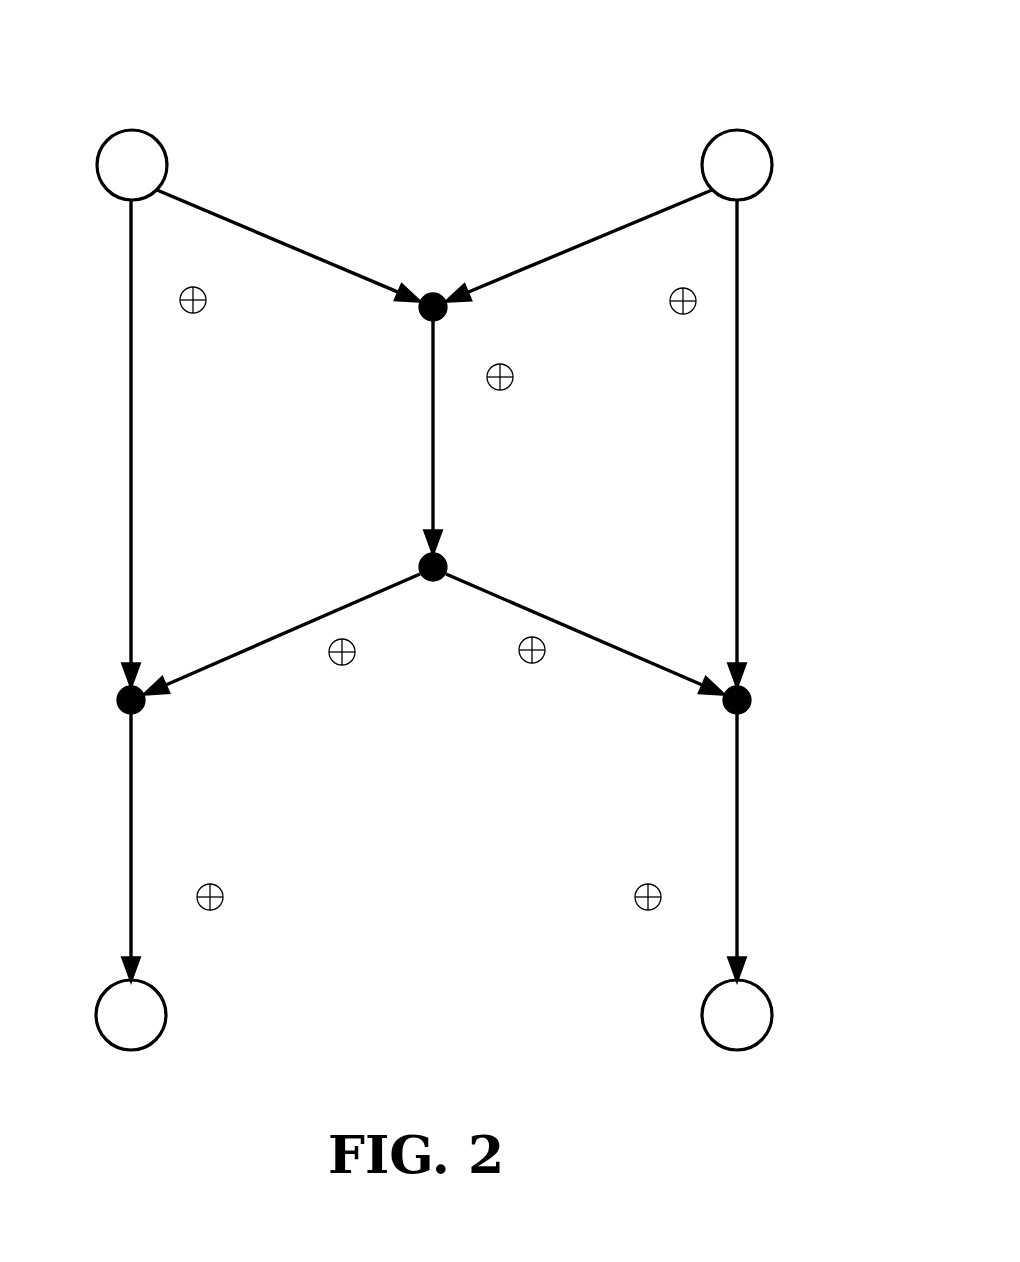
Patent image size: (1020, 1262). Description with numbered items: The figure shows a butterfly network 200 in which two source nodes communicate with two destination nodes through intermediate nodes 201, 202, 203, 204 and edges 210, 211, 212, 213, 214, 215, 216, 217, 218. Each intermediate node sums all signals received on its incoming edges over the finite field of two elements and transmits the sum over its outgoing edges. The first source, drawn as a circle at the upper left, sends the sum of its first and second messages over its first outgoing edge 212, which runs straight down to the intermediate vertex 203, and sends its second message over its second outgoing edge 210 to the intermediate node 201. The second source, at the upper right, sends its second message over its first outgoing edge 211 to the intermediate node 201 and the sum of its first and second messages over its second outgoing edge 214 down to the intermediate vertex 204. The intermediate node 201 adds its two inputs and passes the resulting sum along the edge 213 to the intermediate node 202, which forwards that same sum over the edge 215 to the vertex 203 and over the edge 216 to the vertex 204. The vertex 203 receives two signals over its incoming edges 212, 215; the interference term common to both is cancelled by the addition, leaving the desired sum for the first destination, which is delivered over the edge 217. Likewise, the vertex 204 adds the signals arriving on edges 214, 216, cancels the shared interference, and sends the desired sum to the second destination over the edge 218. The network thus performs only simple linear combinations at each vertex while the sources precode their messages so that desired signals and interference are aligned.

The butterfly network 200 is at (788, 84).
The intermediate node 201 is at (425, 294).
The intermediate node 202 is at (420, 562).
The intermediate node 203 is at (118, 702).
The intermediate node 204 is at (752, 698).
The edge 210 is at (273, 237).
The edge 211 is at (562, 248).
The edge 212 is at (122, 360).
The edge 213 is at (430, 406).
The edge 214 is at (742, 360).
The edge 215 is at (268, 632).
The edge 216 is at (543, 607).
The edge 217 is at (125, 836).
The edge 218 is at (742, 836).